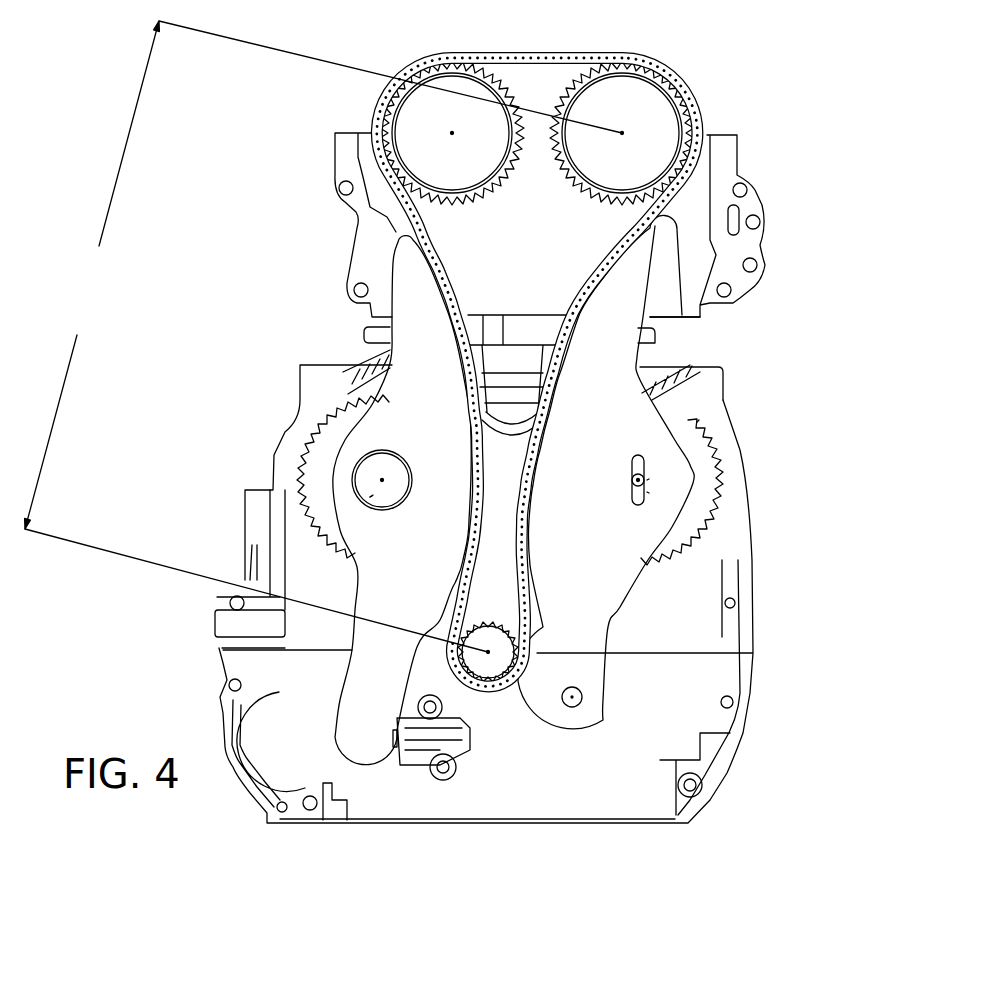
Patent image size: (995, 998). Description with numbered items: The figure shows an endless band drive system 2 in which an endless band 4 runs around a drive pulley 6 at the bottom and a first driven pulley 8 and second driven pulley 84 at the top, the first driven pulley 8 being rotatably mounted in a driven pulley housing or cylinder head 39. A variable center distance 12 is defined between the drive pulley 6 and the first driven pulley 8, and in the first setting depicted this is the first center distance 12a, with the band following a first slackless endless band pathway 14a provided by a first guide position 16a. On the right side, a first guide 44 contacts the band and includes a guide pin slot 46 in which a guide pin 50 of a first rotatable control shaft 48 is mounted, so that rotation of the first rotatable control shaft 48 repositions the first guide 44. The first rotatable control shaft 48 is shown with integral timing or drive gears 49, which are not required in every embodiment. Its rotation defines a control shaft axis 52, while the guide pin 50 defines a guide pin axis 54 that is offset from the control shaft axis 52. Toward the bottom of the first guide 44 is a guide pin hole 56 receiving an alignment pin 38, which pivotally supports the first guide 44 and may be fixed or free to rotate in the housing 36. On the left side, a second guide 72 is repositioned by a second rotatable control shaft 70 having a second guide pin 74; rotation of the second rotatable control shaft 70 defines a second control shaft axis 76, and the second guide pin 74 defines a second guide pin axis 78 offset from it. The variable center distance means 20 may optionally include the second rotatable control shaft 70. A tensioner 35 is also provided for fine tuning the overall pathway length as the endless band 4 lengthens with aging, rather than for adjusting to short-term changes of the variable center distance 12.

The endless band drive system 2 is at (772, 350).
The endless band 4 is at (388, 220).
The drive pulley 6 is at (497, 687).
The first driven pulley 8 is at (593, 174).
The variable center distance 12 is at (383, 372).
The first center distance 12a is at (323, 336).
The first slackless endless band pathway 14a is at (435, 270).
The first guide position 16a is at (588, 366).
The variable center distance means 20 is at (770, 587).
The tensioner 35 is at (412, 745).
The housing 36 is at (708, 638).
The alignment pin 38 is at (577, 693).
The driven pulley housing or cylinder head 39 is at (728, 168).
The first guide 44 is at (566, 589).
The guide pin slot 46 is at (647, 492).
The first rotatable control shaft 48 is at (703, 497).
The timing or drive gears 49 is at (697, 422).
The guide pin 50 is at (640, 483).
The control shaft axis 52 is at (647, 480).
The guide pin axis 54 is at (636, 476).
The guide pin hole 56 is at (580, 705).
The second rotatable control shaft 70 is at (370, 497).
The second guide 72 is at (388, 576).
The second guide pin 74 is at (373, 465).
The second control shaft axis 76 is at (378, 478).
The second guide pin axis 78 is at (382, 480).
The second driven pulley 84 is at (421, 174).